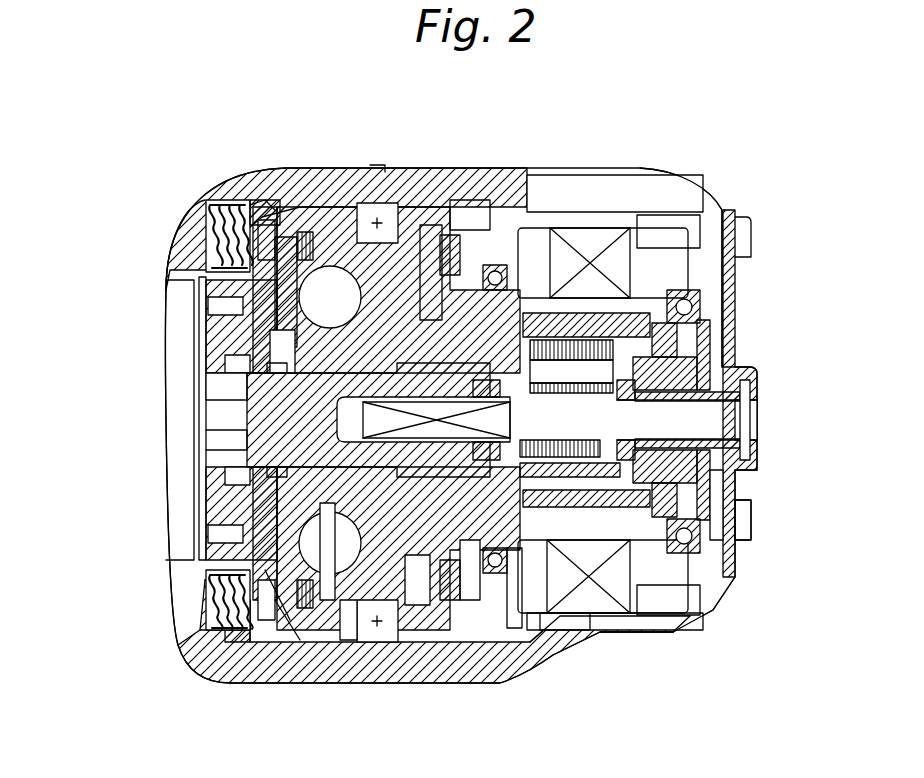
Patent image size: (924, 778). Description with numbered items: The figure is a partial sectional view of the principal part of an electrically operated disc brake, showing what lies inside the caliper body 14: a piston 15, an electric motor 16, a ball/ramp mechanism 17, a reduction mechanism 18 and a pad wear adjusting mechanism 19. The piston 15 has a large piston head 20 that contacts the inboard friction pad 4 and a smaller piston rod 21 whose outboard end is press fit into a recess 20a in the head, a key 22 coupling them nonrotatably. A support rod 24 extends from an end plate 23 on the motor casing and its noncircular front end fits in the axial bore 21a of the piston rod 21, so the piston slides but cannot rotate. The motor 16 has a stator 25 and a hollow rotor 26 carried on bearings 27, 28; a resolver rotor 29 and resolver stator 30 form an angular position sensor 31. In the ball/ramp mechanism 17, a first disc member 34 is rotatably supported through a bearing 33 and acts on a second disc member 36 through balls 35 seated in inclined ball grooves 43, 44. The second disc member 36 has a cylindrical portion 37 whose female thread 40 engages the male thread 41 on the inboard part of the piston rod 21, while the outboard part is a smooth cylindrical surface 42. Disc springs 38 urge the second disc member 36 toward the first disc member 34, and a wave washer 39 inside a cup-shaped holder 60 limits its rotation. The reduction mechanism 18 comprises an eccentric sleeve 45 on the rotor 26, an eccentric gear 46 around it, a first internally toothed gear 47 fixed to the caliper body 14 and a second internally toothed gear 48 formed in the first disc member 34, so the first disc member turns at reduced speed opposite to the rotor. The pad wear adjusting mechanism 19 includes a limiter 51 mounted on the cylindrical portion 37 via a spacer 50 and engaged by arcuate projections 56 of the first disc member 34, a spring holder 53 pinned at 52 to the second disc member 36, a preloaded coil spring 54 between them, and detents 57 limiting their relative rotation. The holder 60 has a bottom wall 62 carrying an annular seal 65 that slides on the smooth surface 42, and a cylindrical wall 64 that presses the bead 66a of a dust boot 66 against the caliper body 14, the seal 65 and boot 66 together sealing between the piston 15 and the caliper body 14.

The friction pad 4 is at (180, 515).
The caliper body 14 is at (364, 172).
The piston 15 is at (200, 488).
The electric motor 16 is at (740, 200).
The ball/ramp mechanism 17 is at (331, 640).
The reduction mechanism 18 is at (425, 230).
The pad wear adjusting mechanism 19 is at (600, 560).
The piston head 20 is at (202, 540).
The recess 20a is at (230, 440).
The piston rod 21 is at (240, 520).
The axial bore 21a is at (230, 380).
The key 22 is at (300, 400).
The end plate 23 is at (765, 500).
The support rod 24 is at (728, 418).
The stator 25 is at (640, 240).
The rotor 26 is at (585, 260).
The bearing 27 is at (740, 292).
The bearing 28 is at (525, 250).
The resolver rotor 29 is at (740, 336).
The resolver stator 30 is at (740, 364).
The angular position sensor 31 is at (847, 313).
The bearing 33 is at (378, 645).
The first disc member 34 is at (330, 266).
The balls 35 is at (284, 207).
The second disc member 36 is at (290, 299).
The cylindrical portion 37 is at (535, 560).
The disc springs 38 is at (752, 455).
The wave washer 39 is at (230, 650).
The female thread 40 is at (255, 335).
The male thread 41 is at (420, 605).
The smooth cylindrical surface 42 is at (215, 600).
The ball grooves 43 is at (350, 642).
The ball grooves 44 is at (300, 642).
The eccentric sleeve 45 is at (460, 600).
The eccentric gear 46 is at (470, 580).
The first internally toothed gear 47 is at (490, 265).
The second internally toothed gear 48 is at (400, 232).
The spacer 50 is at (683, 298).
The limiter 51 is at (560, 540).
The pin 52 is at (760, 478).
The spring holder 53 is at (700, 225).
The coil spring 54 is at (720, 610).
The arcuate projections 56 is at (450, 245).
The detents 57 is at (640, 580).
The holder 60 is at (193, 208).
The bottom wall 62 is at (235, 265).
The cylindrical wall 64 is at (250, 642).
The annular seal 65 is at (270, 350).
The dust boot 66 is at (215, 240).
The bead 66a is at (256, 185).